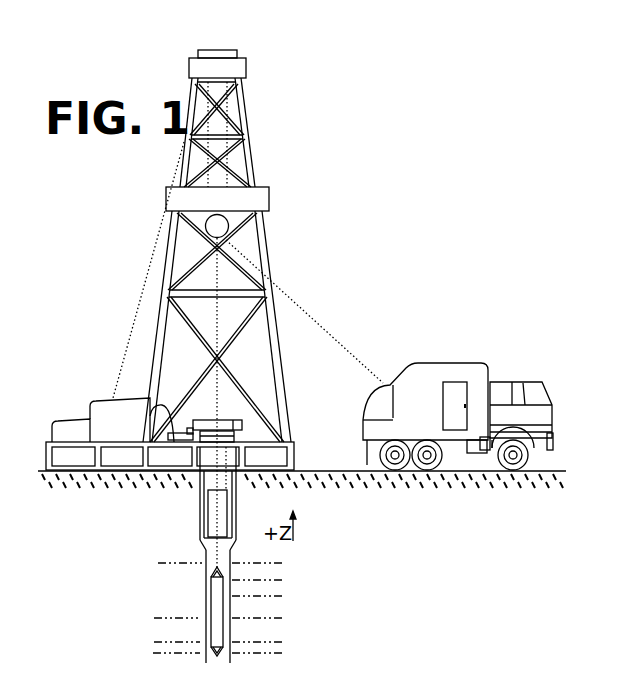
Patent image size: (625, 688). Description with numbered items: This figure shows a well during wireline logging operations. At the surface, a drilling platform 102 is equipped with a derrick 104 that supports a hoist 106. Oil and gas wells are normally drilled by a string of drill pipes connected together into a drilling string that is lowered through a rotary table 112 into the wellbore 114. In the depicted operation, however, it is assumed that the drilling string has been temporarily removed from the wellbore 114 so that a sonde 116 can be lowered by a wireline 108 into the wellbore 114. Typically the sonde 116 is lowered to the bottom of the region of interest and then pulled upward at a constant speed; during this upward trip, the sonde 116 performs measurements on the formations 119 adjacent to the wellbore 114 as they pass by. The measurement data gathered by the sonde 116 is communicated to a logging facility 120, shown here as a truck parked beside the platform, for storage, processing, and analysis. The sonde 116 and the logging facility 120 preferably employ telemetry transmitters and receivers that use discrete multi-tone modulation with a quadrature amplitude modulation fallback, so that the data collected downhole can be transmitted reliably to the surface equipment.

The drilling platform 102 is at (294, 451).
The derrick 104 is at (283, 410).
The hoist 106 is at (228, 223).
The wireline 108 is at (284, 296).
The rotary table 112 is at (232, 420).
The wellbore 114 is at (207, 551).
The sonde 116 is at (213, 607).
The formations 119 is at (283, 563).
The logging facility 120 is at (422, 363).